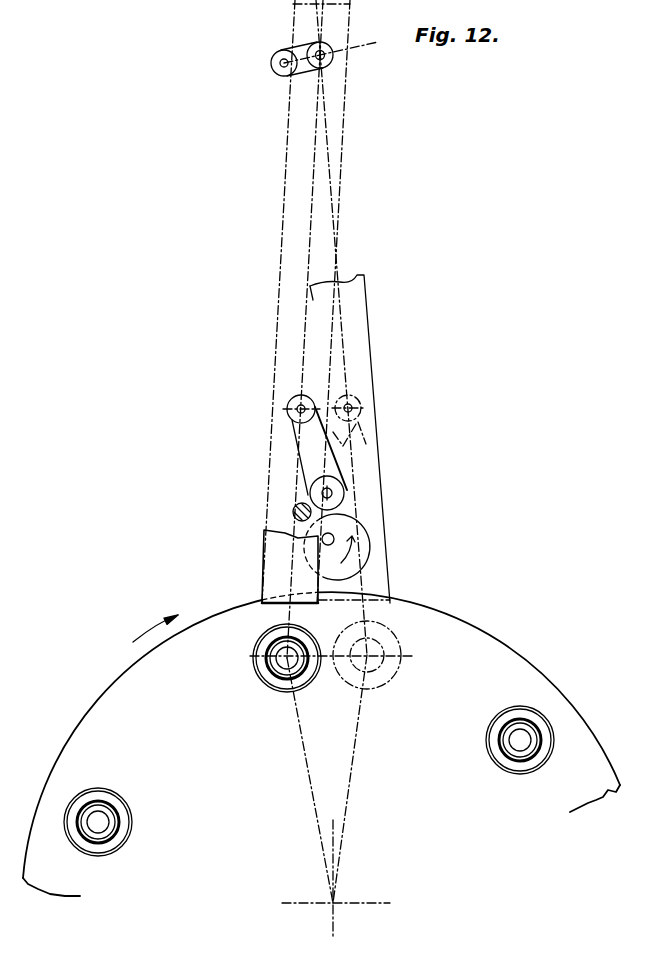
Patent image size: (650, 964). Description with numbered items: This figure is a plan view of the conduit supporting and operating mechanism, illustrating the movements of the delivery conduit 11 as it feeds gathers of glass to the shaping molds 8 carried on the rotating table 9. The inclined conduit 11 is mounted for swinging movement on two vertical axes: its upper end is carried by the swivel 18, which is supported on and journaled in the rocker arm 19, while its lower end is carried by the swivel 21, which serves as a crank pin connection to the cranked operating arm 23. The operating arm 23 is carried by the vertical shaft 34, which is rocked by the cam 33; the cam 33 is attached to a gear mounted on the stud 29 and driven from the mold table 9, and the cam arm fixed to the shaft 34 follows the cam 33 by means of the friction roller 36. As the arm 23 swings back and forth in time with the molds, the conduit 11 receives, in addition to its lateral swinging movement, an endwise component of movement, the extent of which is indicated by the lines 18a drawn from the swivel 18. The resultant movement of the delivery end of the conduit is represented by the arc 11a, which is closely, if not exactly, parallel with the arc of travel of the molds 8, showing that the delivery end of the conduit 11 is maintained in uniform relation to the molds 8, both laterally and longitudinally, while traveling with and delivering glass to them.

The shaping mold 8 is at (268, 688).
The rotating table 9 is at (473, 630).
The inclined conduit structure 11 is at (280, 326).
The arc of resultant movement 11a is at (333, 597).
The swivel 18 is at (332, 65).
The lines indicating endwise movement 18a is at (358, 42).
The rocker arm 19 is at (303, 74).
The swivel 21 is at (288, 408).
The cranked operating arm 23 is at (293, 447).
The stud 29 is at (322, 541).
The cam 33 is at (370, 546).
The vertical shaft 34 is at (330, 492).
The friction roller 36 is at (292, 512).